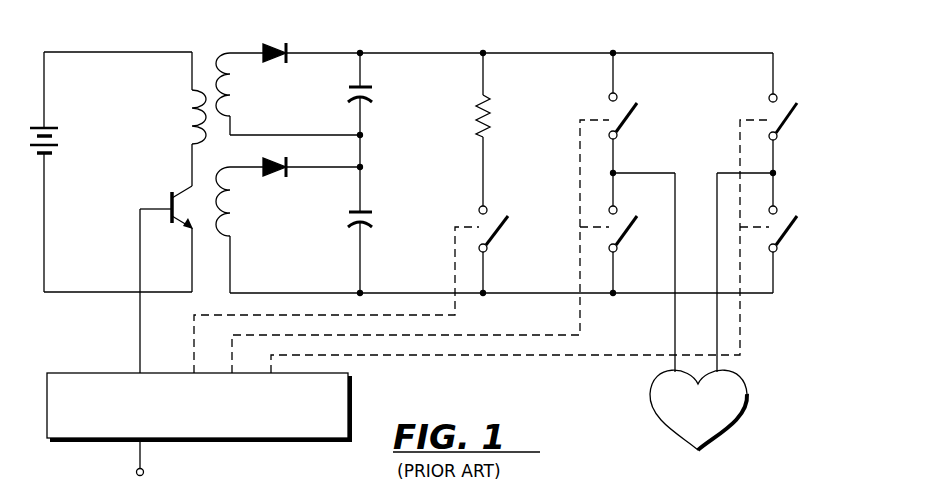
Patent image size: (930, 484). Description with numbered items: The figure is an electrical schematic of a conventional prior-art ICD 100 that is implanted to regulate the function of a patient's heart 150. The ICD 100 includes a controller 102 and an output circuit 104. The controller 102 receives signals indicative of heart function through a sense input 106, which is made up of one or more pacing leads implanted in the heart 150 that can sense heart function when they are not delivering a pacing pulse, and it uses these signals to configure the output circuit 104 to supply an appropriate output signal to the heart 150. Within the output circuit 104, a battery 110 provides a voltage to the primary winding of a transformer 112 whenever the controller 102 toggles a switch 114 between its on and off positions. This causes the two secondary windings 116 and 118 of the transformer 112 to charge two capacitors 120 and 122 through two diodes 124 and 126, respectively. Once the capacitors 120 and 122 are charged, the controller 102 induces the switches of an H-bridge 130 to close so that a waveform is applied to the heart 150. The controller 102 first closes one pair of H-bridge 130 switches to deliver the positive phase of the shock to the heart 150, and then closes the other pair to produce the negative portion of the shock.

The ICD 100 is at (40, 255).
The controller 102 is at (104, 373).
The output circuit 104 is at (135, 38).
The sense input 106 is at (201, 462).
The battery 110 is at (52, 128).
The transformer 112 is at (198, 44).
The switch 114 is at (170, 223).
The secondary winding 116 is at (228, 111).
The secondary winding 118 is at (224, 226).
The capacitor 120 is at (372, 87).
The capacitor 122 is at (372, 212).
The diode 124 is at (288, 45).
The diode 126 is at (296, 152).
The H-bridge 130 is at (686, 53).
The heart 150 is at (724, 410).